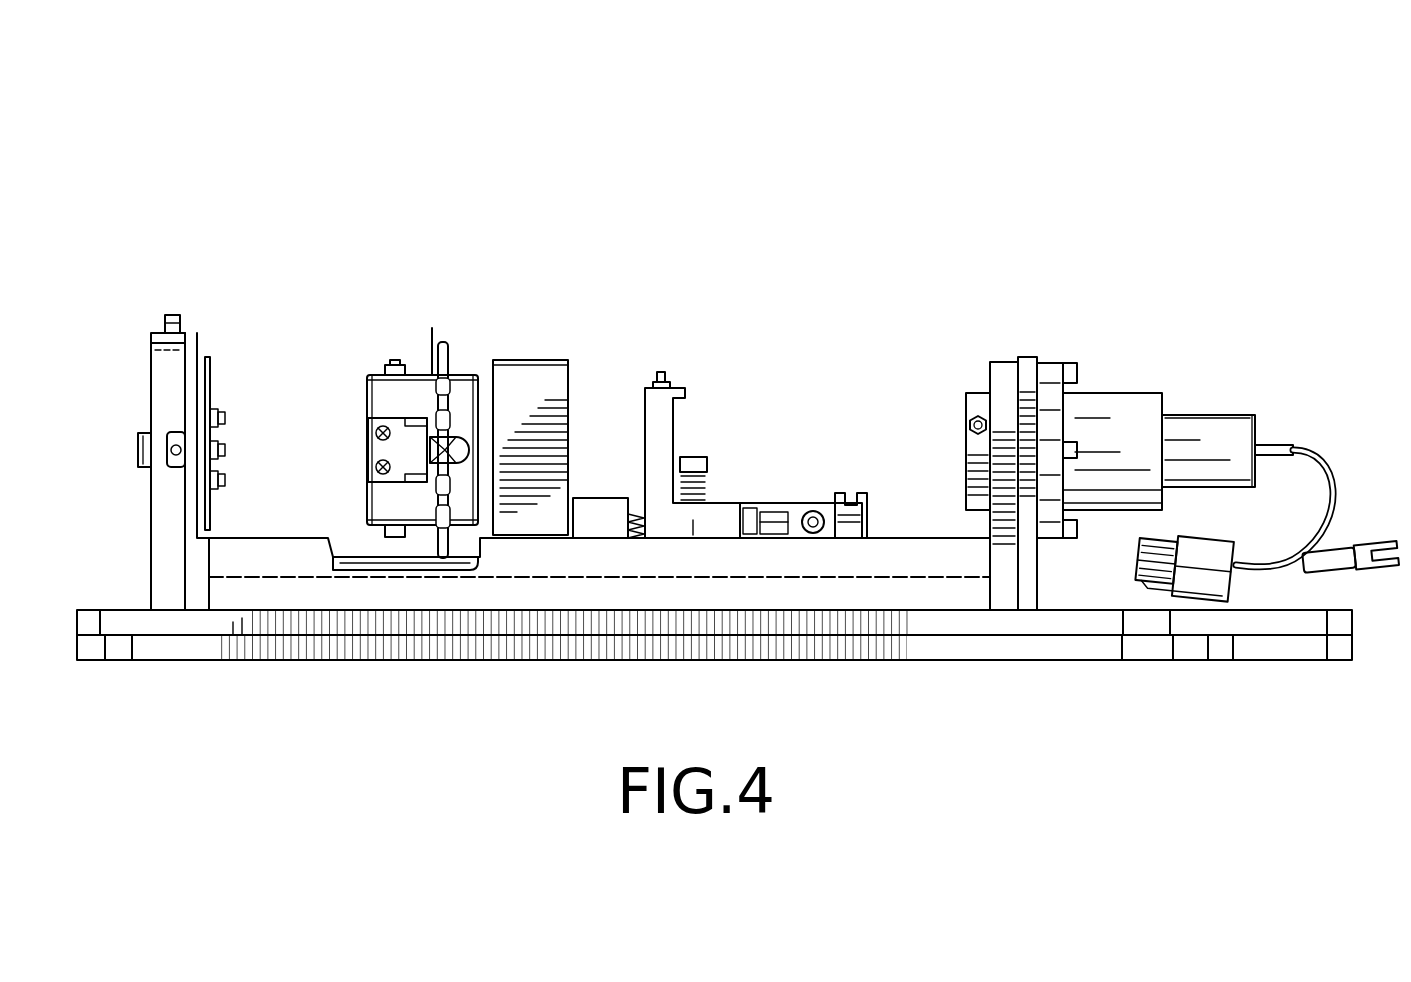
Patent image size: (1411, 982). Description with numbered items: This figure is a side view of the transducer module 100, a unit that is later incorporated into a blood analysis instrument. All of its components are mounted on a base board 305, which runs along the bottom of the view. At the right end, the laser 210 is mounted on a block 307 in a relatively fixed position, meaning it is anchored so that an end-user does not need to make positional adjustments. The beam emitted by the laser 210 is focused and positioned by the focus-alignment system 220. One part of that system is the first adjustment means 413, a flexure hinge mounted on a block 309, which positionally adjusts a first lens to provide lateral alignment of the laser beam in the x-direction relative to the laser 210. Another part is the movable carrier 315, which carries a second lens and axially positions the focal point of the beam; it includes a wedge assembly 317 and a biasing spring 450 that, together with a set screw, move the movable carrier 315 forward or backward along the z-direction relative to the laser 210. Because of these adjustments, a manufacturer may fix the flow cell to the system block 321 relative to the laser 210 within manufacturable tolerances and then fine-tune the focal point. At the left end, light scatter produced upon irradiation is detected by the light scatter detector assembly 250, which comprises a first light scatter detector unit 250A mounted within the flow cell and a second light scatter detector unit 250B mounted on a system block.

The transducer module 100 is at (630, 216).
The light scatter detector assembly 250 is at (316, 247).
The first light scatter detector unit 250A is at (432, 435).
The second light scatter detector unit 250B is at (212, 390).
The system block 321 is at (536, 397).
The biasing spring 450 is at (600, 515).
The focus-alignment system 220 is at (790, 348).
The movable carrier 315 is at (720, 517).
The wedge assembly 317 is at (795, 503).
The first adjustment means 413 is at (977, 400).
The block 309 is at (1005, 383).
The block 307 is at (1028, 375).
The laser 210 is at (1130, 417).
The base board 305 is at (1040, 648).